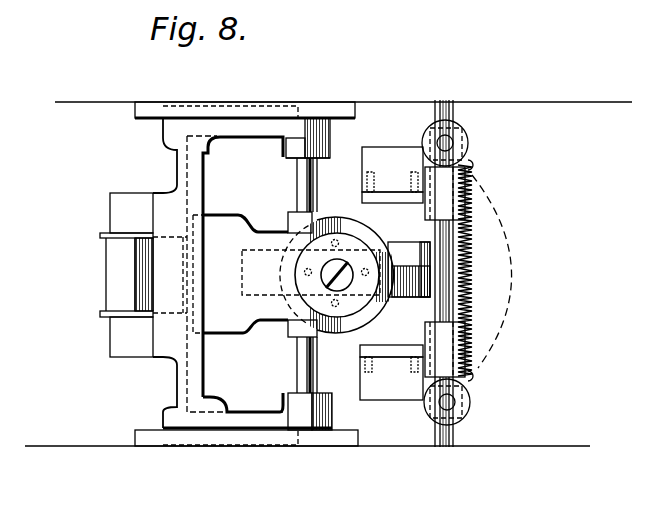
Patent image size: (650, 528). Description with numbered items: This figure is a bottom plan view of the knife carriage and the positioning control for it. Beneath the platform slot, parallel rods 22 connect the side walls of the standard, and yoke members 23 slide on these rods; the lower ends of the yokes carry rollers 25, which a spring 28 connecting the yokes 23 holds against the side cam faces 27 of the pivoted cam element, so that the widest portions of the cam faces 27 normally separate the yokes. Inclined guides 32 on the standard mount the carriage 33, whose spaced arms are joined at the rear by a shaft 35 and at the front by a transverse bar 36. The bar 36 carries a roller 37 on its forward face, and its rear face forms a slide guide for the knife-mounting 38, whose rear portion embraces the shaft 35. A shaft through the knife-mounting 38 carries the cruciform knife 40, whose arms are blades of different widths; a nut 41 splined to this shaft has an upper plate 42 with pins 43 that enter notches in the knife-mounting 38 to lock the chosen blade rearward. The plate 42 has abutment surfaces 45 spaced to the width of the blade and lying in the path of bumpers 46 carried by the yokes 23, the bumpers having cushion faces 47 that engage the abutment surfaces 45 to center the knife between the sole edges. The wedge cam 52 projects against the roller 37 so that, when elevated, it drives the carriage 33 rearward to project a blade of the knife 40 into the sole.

The parallel rods 22 is at (465, 441).
The yoke members 23 is at (471, 159).
The rollers 25 is at (463, 124).
The side cam faces 27 is at (477, 182).
The spring 28 is at (472, 267).
The guides 32 is at (315, 437).
The wedge cam 52 is at (326, 102).
The carriage 33 is at (218, 273).
The shaft 35 is at (313, 379).
The transverse bar 36 is at (197, 378).
The roller 37 is at (122, 290).
The knife-mounting 38 is at (245, 267).
The cruciform knife 40 is at (330, 191).
The nut 41 is at (300, 280).
The plate 42 is at (452, 243).
The pins 43 is at (307, 273).
The abutment surfaces 45 is at (322, 249).
The bumpers 46 is at (384, 165).
The cushion faces 47 is at (391, 200).